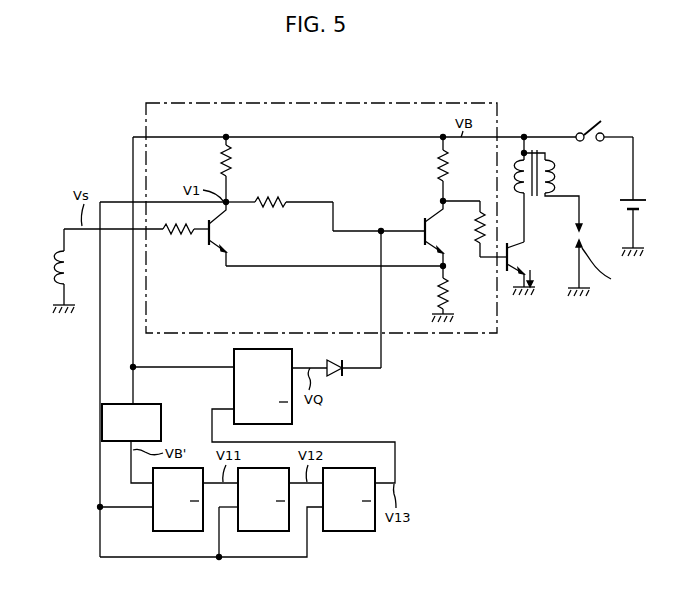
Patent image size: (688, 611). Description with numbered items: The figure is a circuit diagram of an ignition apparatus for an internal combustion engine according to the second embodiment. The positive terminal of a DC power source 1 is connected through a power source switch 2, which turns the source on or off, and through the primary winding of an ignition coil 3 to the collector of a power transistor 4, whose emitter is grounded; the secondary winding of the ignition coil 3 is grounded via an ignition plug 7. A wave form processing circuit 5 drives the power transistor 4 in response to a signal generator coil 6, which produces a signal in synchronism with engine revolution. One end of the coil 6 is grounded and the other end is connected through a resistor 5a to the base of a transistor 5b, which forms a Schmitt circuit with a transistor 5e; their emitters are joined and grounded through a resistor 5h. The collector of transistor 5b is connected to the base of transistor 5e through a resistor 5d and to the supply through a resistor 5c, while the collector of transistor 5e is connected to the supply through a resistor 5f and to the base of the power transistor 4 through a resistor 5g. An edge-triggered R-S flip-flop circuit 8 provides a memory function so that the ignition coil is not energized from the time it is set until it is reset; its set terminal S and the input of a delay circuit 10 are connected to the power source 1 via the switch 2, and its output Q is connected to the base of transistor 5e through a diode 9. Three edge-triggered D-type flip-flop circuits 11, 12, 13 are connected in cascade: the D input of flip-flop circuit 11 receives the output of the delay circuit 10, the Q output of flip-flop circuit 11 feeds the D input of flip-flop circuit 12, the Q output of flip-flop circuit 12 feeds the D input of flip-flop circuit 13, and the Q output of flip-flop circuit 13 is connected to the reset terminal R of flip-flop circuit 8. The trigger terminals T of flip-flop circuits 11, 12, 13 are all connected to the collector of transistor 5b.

The DC power source 1 is at (619, 206).
The power source switch 2 is at (600, 120).
The ignition coil 3 is at (536, 150).
The power transistor 4 is at (521, 251).
The wave form processing circuit 5 is at (395, 103).
The resistor 5a is at (178, 234).
The transistor 5b is at (215, 229).
The resistor 5c is at (231, 158).
The resistor 5d is at (278, 198).
The transistor 5e is at (438, 217).
The resistor 5f is at (437, 163).
The resistor 5g is at (486, 214).
The resistor 5h is at (438, 298).
The signal generator coil 6 is at (58, 266).
The ignition plug 7 is at (584, 242).
The flip-flop circuit 8 is at (292, 416).
The diode 9 is at (334, 376).
The delay circuit 10 is at (161, 419).
The flip-flop circuit 11 is at (153, 529).
The flip-flop circuit 12 is at (262, 531).
The flip-flop circuit 13 is at (350, 532).